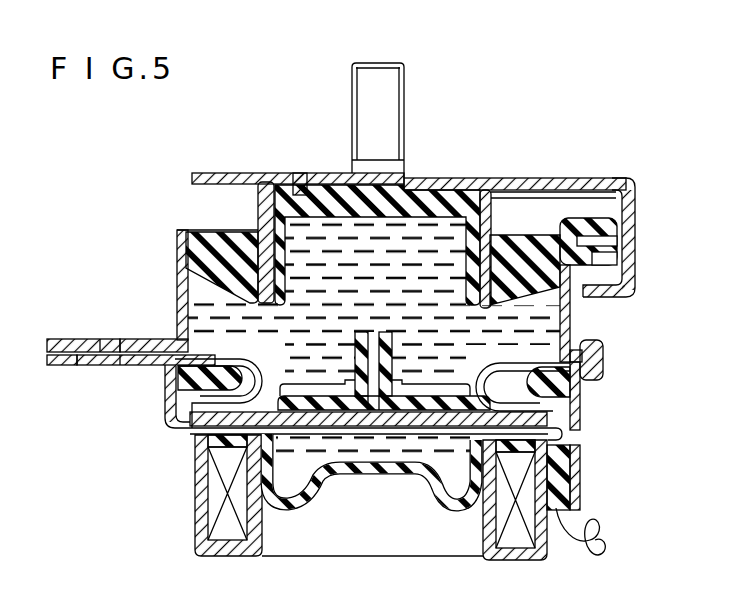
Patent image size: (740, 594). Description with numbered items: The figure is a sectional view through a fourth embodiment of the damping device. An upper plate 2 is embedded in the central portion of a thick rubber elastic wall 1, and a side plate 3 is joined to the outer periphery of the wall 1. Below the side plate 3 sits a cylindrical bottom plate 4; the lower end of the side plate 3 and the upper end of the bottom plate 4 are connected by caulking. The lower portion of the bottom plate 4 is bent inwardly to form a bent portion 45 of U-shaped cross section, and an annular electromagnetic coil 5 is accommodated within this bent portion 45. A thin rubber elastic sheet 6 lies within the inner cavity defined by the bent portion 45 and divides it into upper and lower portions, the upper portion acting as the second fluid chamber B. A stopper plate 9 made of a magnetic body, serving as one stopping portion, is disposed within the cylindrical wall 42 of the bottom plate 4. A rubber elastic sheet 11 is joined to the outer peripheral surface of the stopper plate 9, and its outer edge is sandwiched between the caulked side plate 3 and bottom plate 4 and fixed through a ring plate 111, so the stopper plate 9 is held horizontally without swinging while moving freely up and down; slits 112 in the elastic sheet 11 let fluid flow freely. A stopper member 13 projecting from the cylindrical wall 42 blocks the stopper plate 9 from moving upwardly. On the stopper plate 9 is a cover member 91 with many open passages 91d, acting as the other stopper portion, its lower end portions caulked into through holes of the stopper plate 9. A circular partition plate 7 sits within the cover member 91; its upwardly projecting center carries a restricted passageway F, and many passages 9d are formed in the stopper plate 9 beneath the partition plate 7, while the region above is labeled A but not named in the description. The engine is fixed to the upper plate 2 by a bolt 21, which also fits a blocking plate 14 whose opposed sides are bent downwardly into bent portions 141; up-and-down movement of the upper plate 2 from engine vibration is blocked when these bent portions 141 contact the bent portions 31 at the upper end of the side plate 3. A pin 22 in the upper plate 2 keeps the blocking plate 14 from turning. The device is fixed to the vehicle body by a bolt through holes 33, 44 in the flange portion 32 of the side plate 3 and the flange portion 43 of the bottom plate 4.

The thick rubber elastic wall 1 is at (213, 237).
The upper plate 2 is at (243, 173).
The side plate 3 is at (184, 279).
The cylindrical bottom plate 4 is at (182, 425).
The annular electromagnetic coil 5 is at (207, 540).
The thin rubber elastic sheet 6 is at (377, 475).
The circular partition plate 7 is at (311, 397).
The stopper plate 9 is at (572, 465).
The passages 9d is at (303, 426).
The rubber elastic sheet 11 is at (241, 365).
The stopper member 13 is at (173, 372).
The blocking plate 14 is at (443, 180).
The bolt 21 is at (390, 117).
The pin 22 is at (299, 173).
The bent portions 31 is at (596, 246).
The flange portion 32 is at (137, 343).
The hole 33 is at (92, 343).
The cylindrical wall 42 is at (576, 432).
The flange portion 43 is at (123, 366).
The hole 44 is at (77, 366).
The bent portion 45 is at (263, 522).
The cover member 91 is at (460, 383).
The open passages 91d is at (417, 380).
The ring plate 111 is at (207, 333).
The slits 112 is at (572, 400).
The bent portions 141 is at (634, 292).
The chamber A is at (445, 255).
The second fluid chamber B is at (462, 480).
The restricted passageway F is at (374, 342).